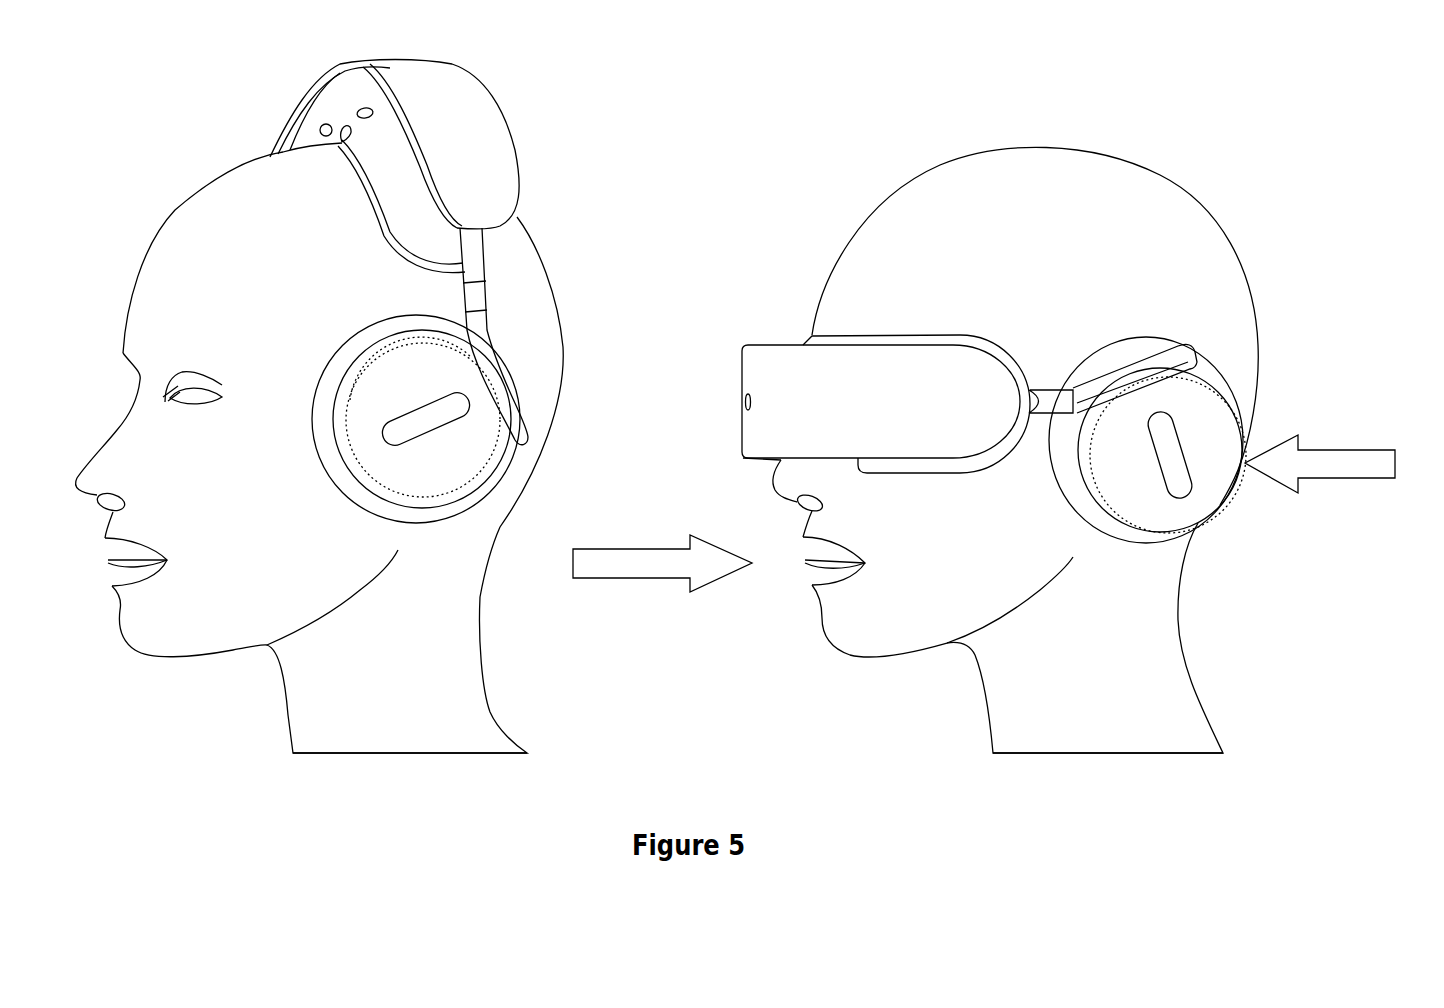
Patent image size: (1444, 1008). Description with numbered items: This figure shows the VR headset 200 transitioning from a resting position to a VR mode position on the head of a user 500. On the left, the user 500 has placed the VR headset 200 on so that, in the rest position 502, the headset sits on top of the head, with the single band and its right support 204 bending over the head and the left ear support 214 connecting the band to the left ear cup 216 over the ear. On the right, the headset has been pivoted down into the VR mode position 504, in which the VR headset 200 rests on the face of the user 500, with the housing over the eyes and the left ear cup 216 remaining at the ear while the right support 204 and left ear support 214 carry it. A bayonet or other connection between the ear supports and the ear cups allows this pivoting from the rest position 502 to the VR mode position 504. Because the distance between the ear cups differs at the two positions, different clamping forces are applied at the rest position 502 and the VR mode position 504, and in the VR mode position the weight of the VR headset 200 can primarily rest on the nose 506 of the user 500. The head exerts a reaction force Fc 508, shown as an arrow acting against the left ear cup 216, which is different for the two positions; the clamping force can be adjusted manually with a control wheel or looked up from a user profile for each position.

The user 500 is at (203, 223).
The VR headset 200 is at (480, 125).
The left ear cup 216 is at (362, 340).
The right support 204 is at (505, 400).
The left ear support 214 is at (447, 457).
The rest position 502 is at (390, 760).
The VR mode position 504 is at (1105, 762).
The nose 506 is at (780, 460).
The head exerting reaction force Fc 508 is at (1396, 440).